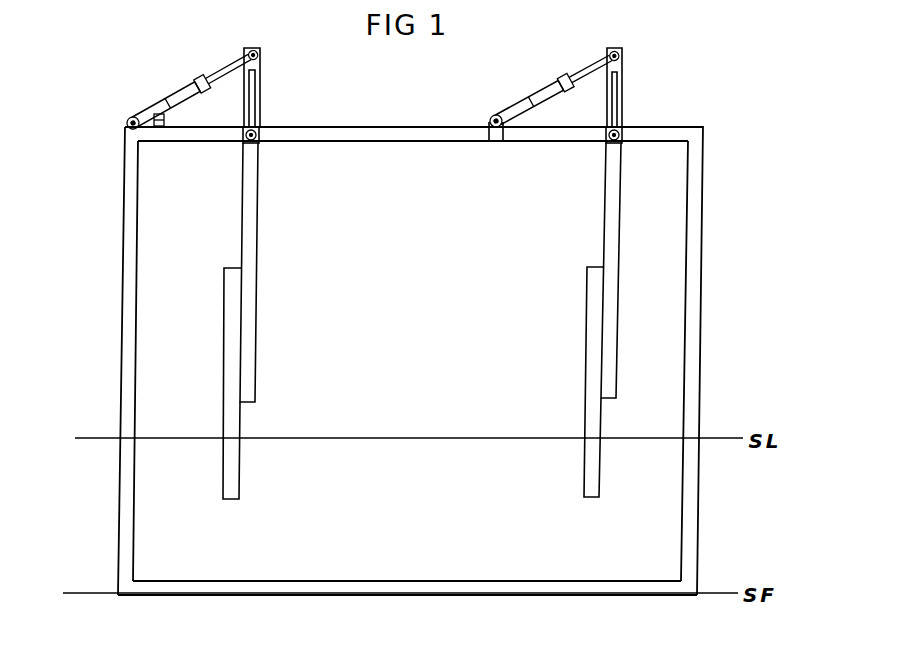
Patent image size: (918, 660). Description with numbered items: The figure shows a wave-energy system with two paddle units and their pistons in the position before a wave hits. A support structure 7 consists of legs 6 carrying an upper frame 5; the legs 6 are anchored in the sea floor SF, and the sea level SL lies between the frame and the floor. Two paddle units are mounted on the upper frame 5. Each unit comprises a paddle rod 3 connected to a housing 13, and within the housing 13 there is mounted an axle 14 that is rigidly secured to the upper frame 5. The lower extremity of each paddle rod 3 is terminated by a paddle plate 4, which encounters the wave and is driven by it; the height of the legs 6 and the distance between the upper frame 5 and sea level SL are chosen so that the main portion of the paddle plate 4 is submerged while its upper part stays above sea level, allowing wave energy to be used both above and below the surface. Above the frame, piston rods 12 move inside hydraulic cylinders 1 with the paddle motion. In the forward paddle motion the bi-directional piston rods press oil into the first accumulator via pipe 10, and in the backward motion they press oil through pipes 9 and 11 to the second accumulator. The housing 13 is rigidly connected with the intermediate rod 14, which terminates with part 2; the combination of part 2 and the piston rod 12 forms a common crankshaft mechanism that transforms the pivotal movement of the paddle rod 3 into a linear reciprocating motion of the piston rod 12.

The hydraulic cylinder 1 is at (371, 87).
The part 2 is at (258, 98).
The paddle rod 3 is at (259, 222).
The paddle plate 4 is at (230, 388).
The upper frame 5 is at (347, 130).
The legs 6 is at (130, 305).
The support structure 7 is at (372, 588).
The pipe 9 is at (177, 109).
The pipe 10 is at (514, 116).
The pipe 11 is at (554, 90).
The piston rod 12 is at (190, 88).
The housing 13 is at (243, 137).
The axle 14 is at (249, 146).